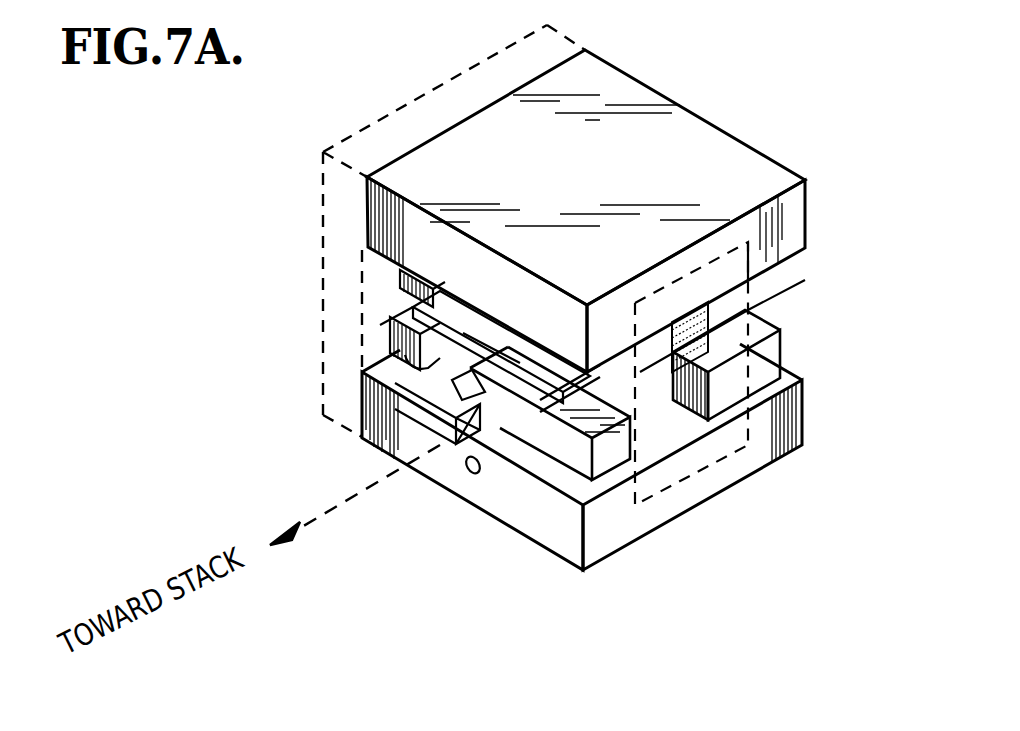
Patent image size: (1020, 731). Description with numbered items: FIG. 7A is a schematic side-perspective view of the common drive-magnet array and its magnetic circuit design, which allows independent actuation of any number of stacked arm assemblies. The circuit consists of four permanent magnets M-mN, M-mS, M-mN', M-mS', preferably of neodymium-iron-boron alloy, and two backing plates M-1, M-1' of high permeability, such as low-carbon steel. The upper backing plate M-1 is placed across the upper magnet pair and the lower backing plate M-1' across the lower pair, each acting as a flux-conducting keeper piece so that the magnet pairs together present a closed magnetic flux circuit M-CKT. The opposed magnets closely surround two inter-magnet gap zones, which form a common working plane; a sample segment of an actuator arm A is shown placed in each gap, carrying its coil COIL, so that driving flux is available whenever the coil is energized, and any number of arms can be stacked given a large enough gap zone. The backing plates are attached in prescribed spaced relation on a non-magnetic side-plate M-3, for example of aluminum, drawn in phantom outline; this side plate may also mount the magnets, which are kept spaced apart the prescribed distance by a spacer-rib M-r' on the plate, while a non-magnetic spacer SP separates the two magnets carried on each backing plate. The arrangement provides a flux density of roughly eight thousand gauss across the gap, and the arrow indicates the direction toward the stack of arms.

The backing plate M-1 is at (586, 211).
The non-magnetic side-plate M-3 is at (375, 120).
The backing plate M-1' is at (501, 457).
The magnetic flux circuit M-CKT is at (725, 458).
The permanent magnet M-mS is at (772, 307).
The non-magnetic spacer means SP is at (690, 322).
The permanent magnet M-mN' is at (791, 365).
The permanent magnet M-mN is at (322, 290).
The spacer-rib M-r' is at (295, 304).
The permanent magnet M-mS' is at (320, 339).
The actuator arm A is at (548, 378).
The coil COIL is at (563, 393).